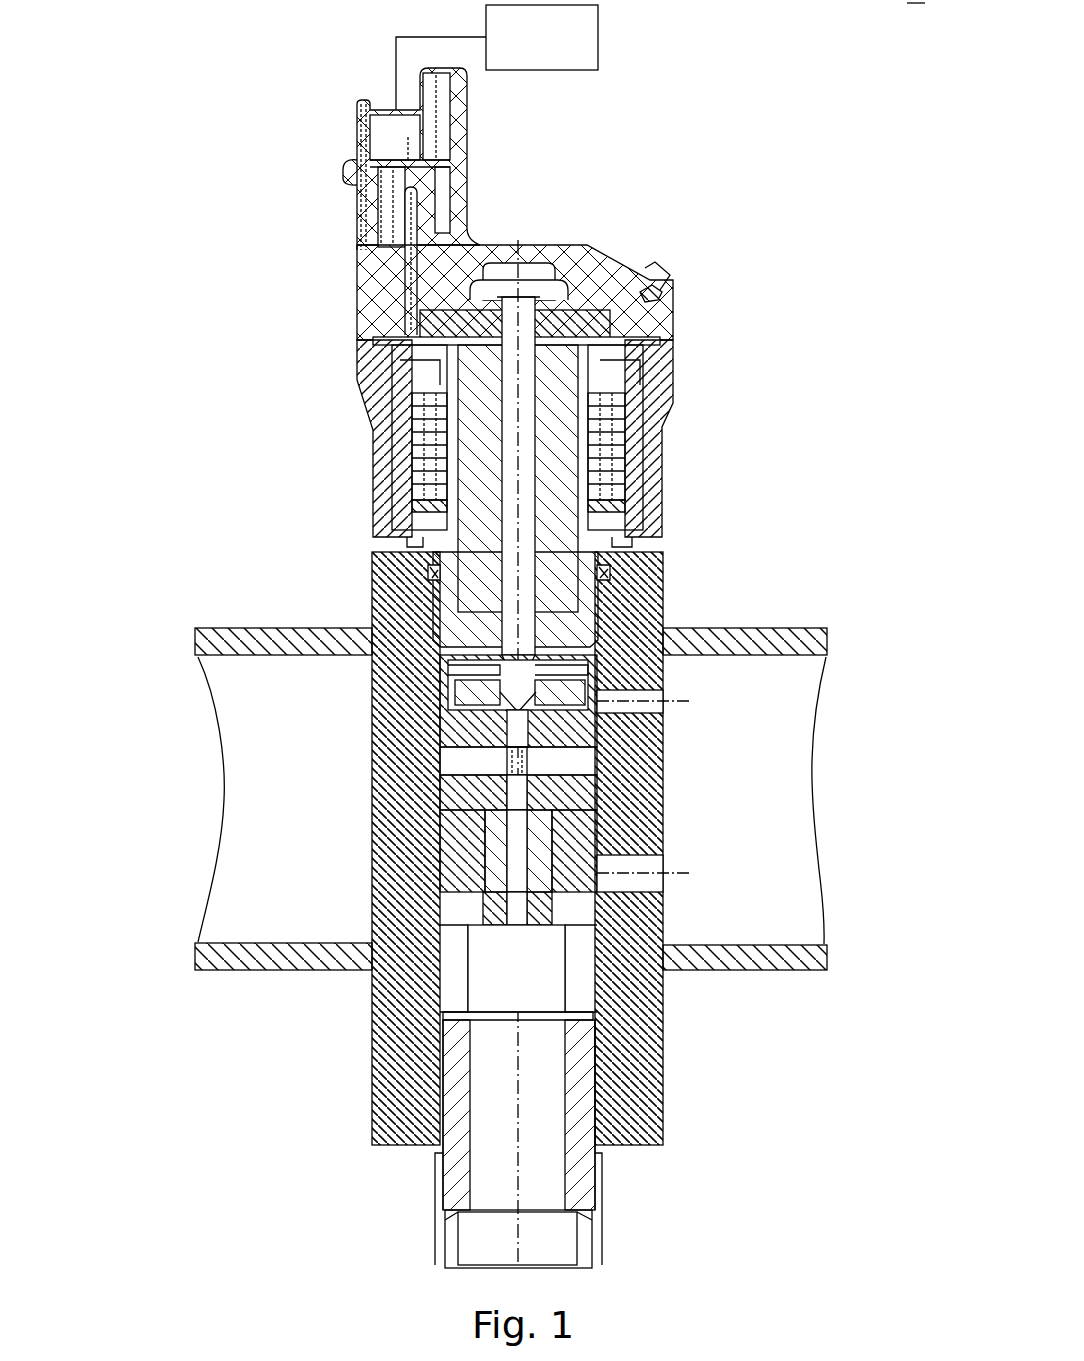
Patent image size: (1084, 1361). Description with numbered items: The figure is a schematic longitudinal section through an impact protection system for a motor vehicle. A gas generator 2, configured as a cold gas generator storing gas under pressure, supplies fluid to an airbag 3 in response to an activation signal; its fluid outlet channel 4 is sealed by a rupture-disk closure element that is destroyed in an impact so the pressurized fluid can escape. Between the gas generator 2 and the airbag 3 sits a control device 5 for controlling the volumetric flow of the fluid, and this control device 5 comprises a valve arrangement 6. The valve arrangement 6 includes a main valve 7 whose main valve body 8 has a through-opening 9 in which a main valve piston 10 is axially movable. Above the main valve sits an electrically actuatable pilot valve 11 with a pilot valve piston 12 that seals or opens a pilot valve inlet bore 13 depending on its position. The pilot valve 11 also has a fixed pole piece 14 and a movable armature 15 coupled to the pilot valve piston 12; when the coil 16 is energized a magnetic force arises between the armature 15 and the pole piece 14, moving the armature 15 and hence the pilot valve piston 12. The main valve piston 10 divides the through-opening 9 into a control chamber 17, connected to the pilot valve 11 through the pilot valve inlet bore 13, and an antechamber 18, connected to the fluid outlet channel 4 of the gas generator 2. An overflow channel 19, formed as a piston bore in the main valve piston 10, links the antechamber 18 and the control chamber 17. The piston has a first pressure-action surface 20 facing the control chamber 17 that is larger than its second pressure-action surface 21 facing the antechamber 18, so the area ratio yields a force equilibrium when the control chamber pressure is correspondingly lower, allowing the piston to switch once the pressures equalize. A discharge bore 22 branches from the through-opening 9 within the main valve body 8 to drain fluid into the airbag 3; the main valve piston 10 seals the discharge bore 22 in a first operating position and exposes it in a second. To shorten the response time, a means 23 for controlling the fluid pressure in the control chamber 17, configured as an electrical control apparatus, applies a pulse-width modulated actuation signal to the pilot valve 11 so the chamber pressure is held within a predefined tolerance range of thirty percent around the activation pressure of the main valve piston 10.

The gas generator 2 is at (605, 1190).
The airbag 3 is at (805, 672).
The fluid outlet channel 4 is at (495, 1157).
The control device 5 is at (770, 85).
The valve arrangement 6 is at (182, 100).
The main valve 7 is at (276, 787).
The main valve body 8 is at (455, 870).
The through-opening 9 is at (545, 900).
The main valve piston 10 is at (455, 790).
The pilot valve 11 is at (742, 362).
The pilot valve piston 12 is at (412, 518).
The pilot valve inlet bore 13 is at (600, 650).
The pole piece 14 is at (560, 543).
The armature 15 is at (656, 290).
The coil 16 is at (405, 448).
The control chamber 17 is at (665, 752).
The antechamber 18 is at (388, 998).
The overflow channel 19 is at (455, 825).
The first pressure-action surface 20 is at (462, 765).
The second pressure-action surface 21 is at (665, 922).
The discharge bore 22 is at (665, 877).
The means for controlling a fluid pressure 23 is at (600, 52).